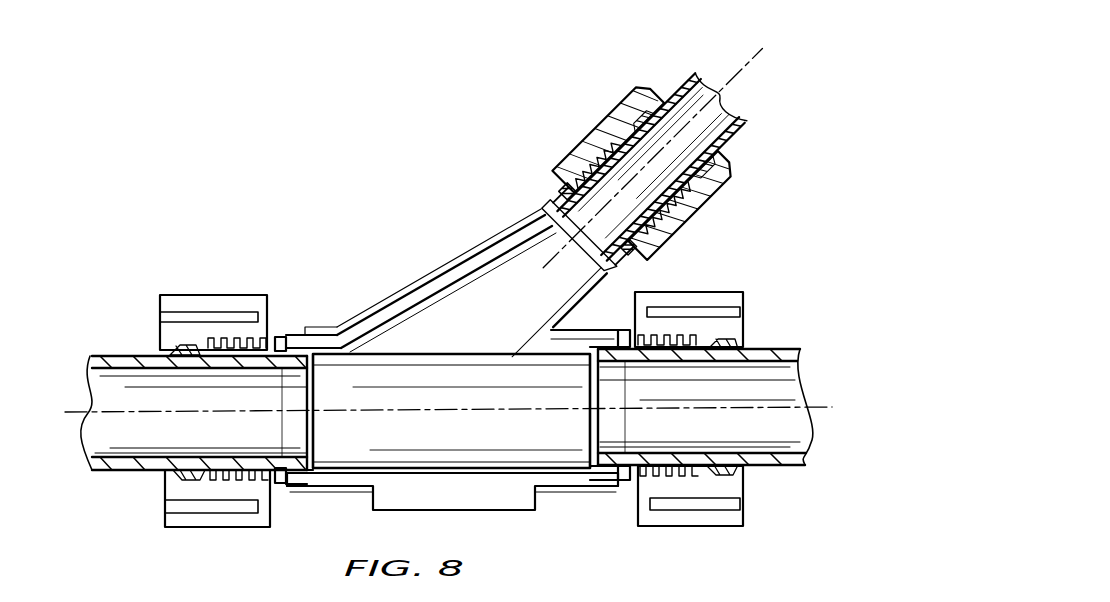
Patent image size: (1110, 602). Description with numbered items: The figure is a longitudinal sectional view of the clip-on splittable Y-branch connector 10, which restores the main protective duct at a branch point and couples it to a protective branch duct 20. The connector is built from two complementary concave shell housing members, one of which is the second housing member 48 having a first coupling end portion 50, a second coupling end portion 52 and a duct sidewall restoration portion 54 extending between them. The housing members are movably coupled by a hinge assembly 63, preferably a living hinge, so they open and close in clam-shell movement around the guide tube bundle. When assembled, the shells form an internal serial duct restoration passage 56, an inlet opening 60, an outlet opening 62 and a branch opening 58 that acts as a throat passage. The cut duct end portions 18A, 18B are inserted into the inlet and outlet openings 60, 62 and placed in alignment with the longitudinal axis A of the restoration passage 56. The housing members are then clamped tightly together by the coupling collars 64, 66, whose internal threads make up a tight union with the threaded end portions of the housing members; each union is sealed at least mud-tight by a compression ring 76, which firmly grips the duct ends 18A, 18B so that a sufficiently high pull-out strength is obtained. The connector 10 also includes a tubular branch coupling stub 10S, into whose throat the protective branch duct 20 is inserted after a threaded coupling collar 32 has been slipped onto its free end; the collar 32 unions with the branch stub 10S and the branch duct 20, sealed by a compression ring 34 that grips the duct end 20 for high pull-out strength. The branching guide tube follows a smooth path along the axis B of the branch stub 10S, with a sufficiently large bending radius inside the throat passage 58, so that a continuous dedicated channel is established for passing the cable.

The Y-branch connector 10 is at (390, 256).
The tubular branch coupling stub 10S is at (490, 238).
The duct end portion 18A is at (120, 355).
The duct end portion 18B is at (790, 349).
The protective branch duct 20 is at (682, 76).
The threaded coupling collar 32 is at (583, 136).
The compression ring 34 is at (690, 188).
The second housing member 48 is at (556, 494).
The first coupling end portion 50 is at (262, 333).
The second coupling end portion 52 is at (650, 486).
The duct sidewall restoration portion 54 is at (465, 445).
The duct restoration passage 56 is at (453, 348).
The branch opening 58 is at (568, 193).
The inlet opening 60 is at (256, 369).
The outlet opening 62 is at (690, 362).
The hinge assembly 63 is at (392, 512).
The coupling collar 64 is at (190, 288).
The coupling collar 66 is at (736, 286).
The compression ring 76 is at (178, 349).
The longitudinal axis A is at (80, 402).
The axis of the branch stub B is at (752, 78).